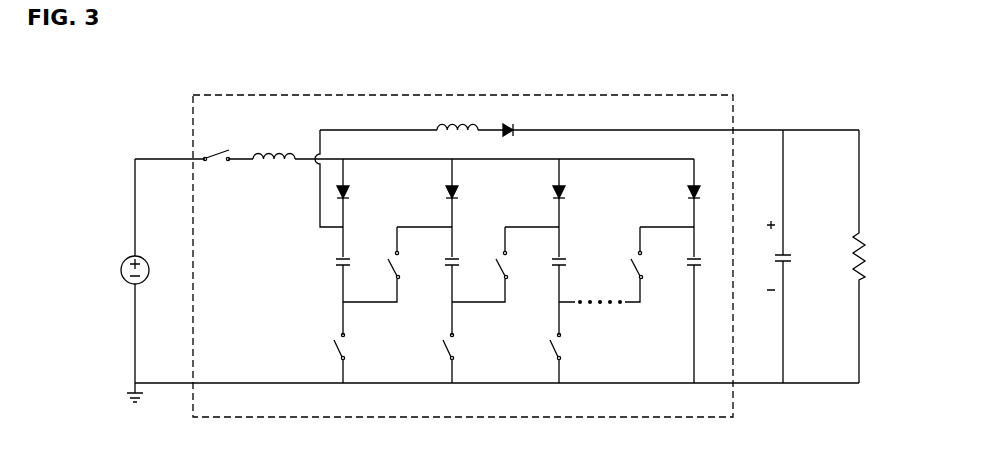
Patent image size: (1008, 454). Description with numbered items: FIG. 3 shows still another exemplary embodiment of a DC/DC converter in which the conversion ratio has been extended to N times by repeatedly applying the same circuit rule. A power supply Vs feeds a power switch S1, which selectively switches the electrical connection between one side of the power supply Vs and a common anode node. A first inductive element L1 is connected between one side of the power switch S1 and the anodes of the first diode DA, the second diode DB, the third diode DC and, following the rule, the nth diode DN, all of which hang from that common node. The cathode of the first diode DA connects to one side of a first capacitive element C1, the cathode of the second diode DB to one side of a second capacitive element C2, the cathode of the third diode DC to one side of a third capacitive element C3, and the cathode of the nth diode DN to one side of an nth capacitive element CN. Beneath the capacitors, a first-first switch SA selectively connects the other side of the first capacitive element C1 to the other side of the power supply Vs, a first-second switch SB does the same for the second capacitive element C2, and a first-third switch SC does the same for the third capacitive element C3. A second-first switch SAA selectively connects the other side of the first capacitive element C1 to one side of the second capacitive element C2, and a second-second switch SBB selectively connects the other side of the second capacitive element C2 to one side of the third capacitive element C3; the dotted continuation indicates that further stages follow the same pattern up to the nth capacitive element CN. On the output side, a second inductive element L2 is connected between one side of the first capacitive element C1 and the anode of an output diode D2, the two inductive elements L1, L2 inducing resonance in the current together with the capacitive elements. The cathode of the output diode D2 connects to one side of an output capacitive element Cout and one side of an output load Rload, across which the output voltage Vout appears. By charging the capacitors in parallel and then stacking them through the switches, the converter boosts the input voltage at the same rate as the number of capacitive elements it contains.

The power supply Vs is at (124, 280).
The power switch S1 is at (216, 170).
The first inductive element L1 is at (274, 148).
The second inductive element L2 is at (457, 119).
The output diode D2 is at (507, 120).
The first diode DA is at (355, 208).
The second diode DB is at (464, 208).
The third diode DC is at (571, 208).
The nth diode DN is at (706, 208).
The first capacitive element C1 is at (333, 296).
The second capacitive element C2 is at (462, 296).
The third capacitive element C3 is at (569, 296).
The nth capacitive element CN is at (705, 320).
The first-first switch SA is at (348, 358).
The first-second switch SB is at (457, 358).
The first-third switch SC is at (564, 358).
The second-first switch SAA is at (397, 264).
The second-second switch SBB is at (505, 264).
The output voltage Vout is at (758, 255).
The output capacitive element Cout is at (797, 256).
The output load Rload is at (876, 256).